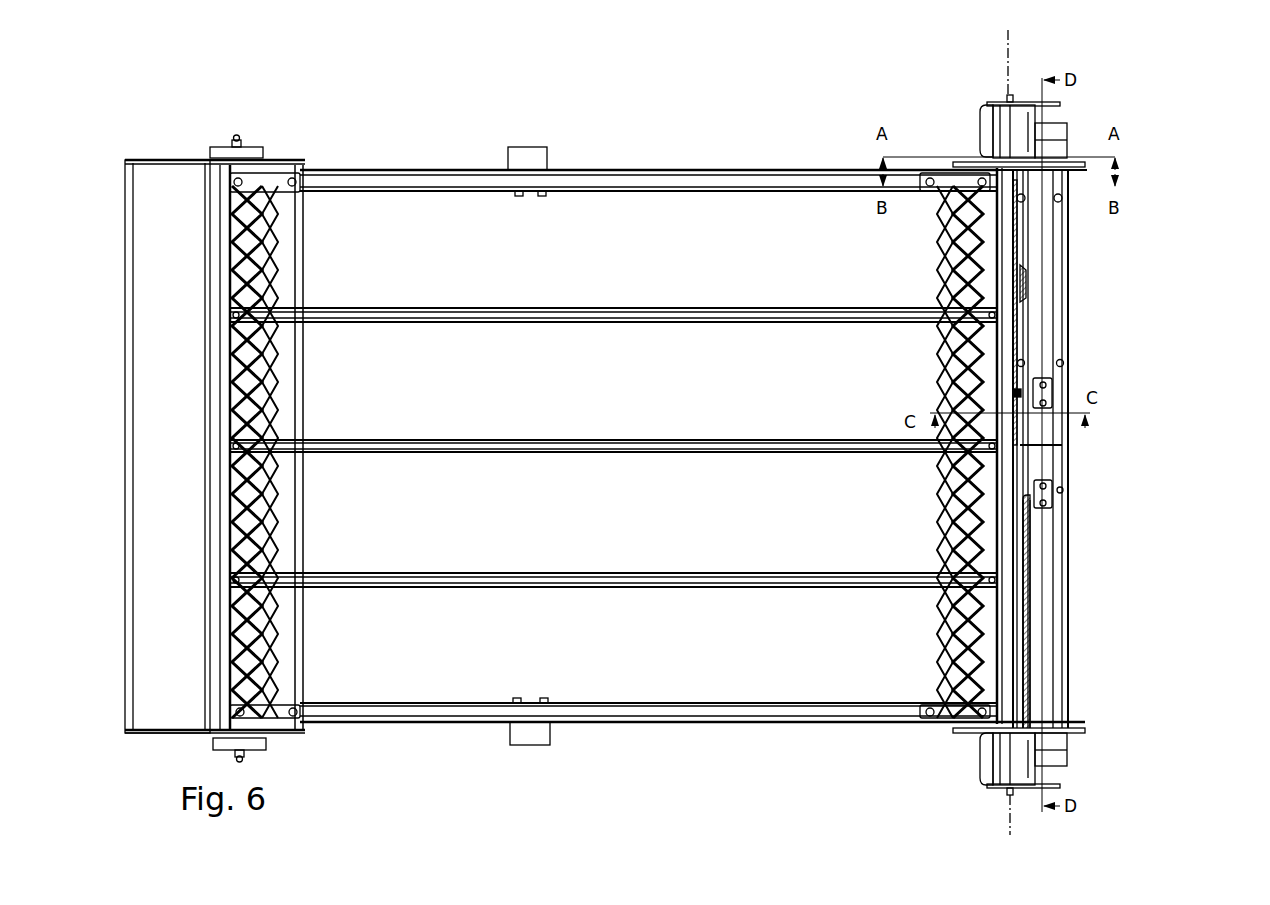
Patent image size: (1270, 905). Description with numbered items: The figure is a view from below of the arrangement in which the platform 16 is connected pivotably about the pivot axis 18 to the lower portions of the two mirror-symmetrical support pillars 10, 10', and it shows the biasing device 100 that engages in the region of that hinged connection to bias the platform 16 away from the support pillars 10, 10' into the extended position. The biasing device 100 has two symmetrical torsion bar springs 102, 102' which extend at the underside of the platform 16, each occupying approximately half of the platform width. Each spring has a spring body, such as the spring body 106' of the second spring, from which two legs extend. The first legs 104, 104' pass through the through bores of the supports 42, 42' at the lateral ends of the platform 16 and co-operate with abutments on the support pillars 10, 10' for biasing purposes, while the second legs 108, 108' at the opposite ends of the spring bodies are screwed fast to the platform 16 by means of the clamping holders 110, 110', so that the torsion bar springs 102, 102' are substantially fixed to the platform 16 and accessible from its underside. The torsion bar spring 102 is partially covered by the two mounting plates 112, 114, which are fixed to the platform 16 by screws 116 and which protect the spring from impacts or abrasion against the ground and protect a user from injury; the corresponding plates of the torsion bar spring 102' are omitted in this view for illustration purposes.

The support pillar 10 is at (975, 107).
The support pillar 10' is at (976, 784).
The platform 16 is at (383, 226).
The pivot axis 18 is at (996, 58).
The support 42 is at (1112, 121).
The support 42' is at (1104, 746).
The biasing device 100 is at (1091, 100).
The torsion bar spring 102 is at (1129, 275).
The torsion bar spring 102' is at (1118, 614).
The first leg 104 is at (693, 130).
The first leg 104' is at (954, 747).
The spring body 106' is at (1124, 611).
The second leg 108 is at (949, 368).
The second leg 108' is at (1128, 468).
The clamping holder 110 is at (1143, 400).
The clamping holder 110' is at (1147, 496).
The mounting plate 112 is at (1031, 338).
The mounting plate 114 is at (1071, 320).
The screw 116 is at (1065, 202).